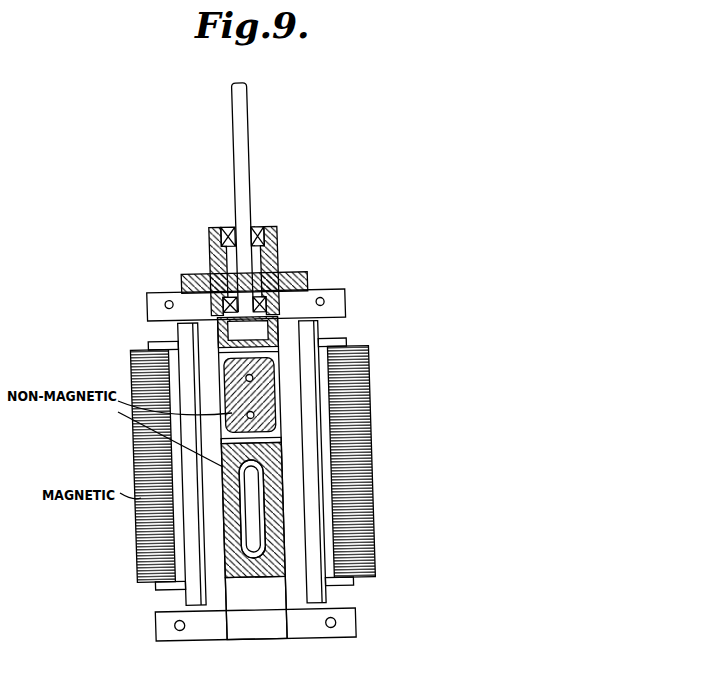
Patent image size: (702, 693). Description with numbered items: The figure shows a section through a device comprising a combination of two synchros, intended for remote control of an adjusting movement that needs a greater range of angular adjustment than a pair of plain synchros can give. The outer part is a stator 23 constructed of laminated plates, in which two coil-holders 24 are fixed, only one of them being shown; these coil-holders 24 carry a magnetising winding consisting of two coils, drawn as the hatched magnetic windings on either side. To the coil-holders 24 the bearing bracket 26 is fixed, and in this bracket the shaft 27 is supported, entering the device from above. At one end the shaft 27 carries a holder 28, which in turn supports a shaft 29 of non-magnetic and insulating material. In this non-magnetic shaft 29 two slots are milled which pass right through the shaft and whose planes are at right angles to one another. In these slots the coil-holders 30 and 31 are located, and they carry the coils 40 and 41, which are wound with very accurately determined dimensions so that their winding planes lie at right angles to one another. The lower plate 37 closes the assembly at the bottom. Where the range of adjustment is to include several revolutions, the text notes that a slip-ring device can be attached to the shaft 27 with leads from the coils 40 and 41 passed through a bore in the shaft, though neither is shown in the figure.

The stator 23 is at (366, 351).
The coil-holders 24 is at (330, 303).
The bearing bracket 26 is at (278, 243).
The shaft 27 is at (242, 182).
The holder 28 is at (252, 332).
The shaft of non-magnetic and insulating material 29 is at (273, 473).
The coil-holder 30 is at (273, 422).
The coil-holder 31 is at (280, 545).
The lower plate 37 is at (320, 590).
The coil 40 is at (280, 431).
The coil 41 is at (253, 531).